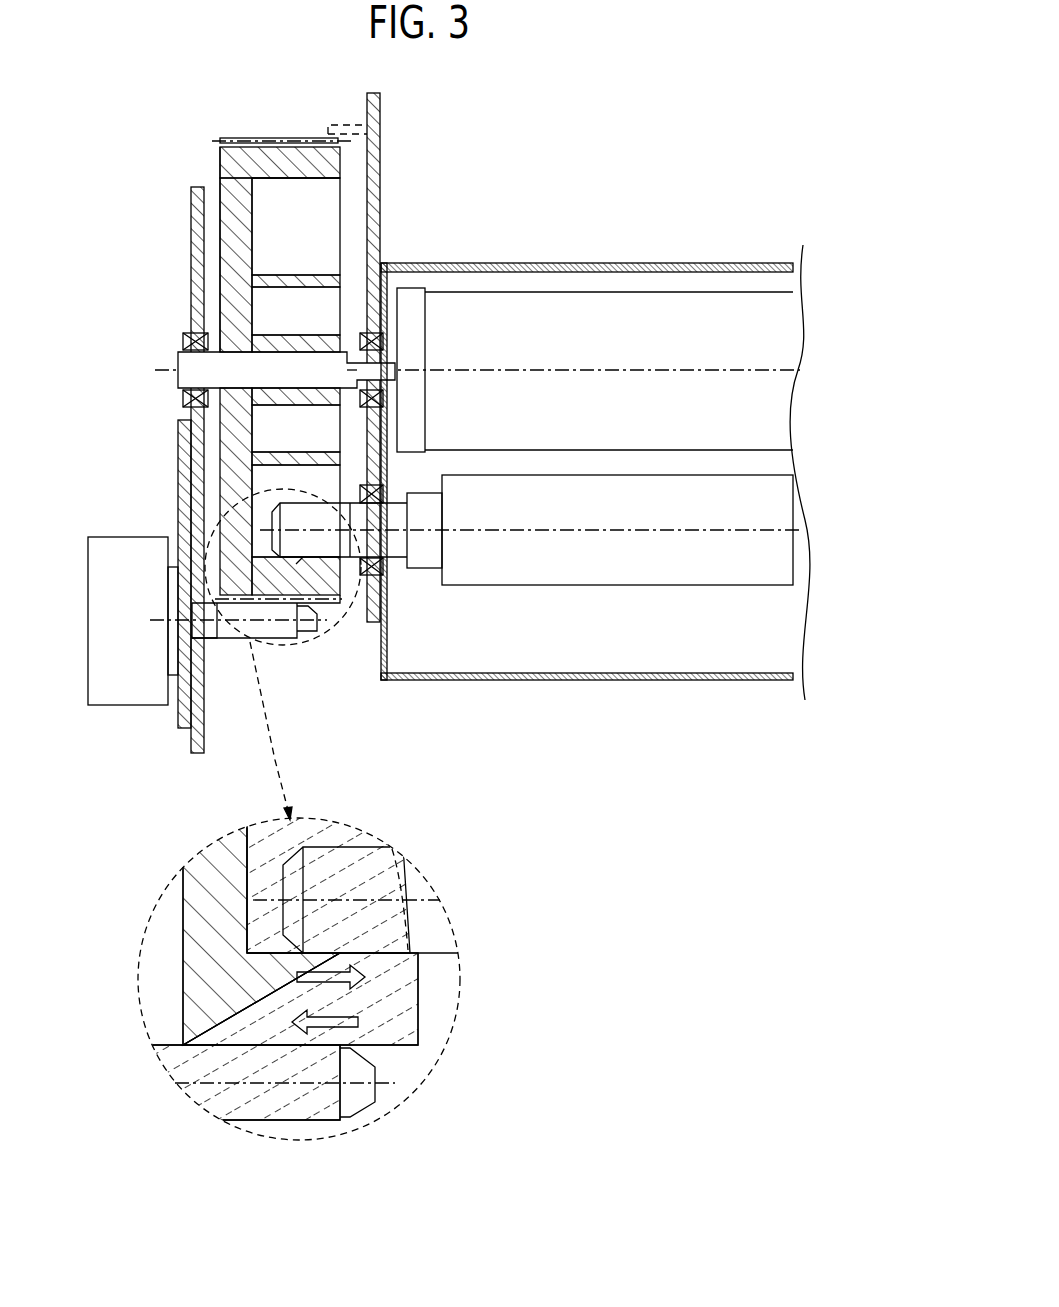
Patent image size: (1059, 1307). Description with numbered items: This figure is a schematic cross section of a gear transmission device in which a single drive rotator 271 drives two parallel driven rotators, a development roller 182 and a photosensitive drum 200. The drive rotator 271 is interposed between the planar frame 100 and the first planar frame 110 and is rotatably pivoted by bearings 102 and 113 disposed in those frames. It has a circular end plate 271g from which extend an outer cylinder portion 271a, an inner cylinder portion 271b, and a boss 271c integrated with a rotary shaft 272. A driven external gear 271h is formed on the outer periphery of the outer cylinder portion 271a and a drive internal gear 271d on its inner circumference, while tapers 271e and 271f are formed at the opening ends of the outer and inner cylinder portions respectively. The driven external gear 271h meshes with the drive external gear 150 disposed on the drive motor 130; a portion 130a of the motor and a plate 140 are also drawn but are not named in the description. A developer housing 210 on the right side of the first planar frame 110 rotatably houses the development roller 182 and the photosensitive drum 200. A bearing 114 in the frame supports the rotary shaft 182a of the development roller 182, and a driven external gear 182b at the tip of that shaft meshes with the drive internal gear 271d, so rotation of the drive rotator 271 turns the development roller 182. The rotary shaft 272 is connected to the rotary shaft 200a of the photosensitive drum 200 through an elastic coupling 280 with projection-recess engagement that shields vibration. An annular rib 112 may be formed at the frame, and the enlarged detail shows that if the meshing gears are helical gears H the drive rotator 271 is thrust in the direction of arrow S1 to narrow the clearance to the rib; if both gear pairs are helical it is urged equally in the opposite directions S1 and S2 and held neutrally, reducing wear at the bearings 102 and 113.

The planar frame 100 is at (191, 235).
The bearing 102 is at (183, 338).
The first planar frame 110 is at (380, 218).
The annular rib 112 is at (343, 122).
The bearing 113 is at (385, 340).
The bearing 114 is at (385, 488).
The drive motor 130 is at (125, 537).
The motor shaft 130a is at (210, 640).
The support plate 140 is at (178, 463).
The drive external gear 150 is at (297, 628).
The development roller 182 is at (622, 568).
The rotary shaft 182a is at (395, 568).
The driven external gear 182b is at (297, 512).
The photosensitive drum 200 is at (711, 308).
The rotary shaft 200a is at (390, 383).
The developer housing 210 is at (583, 264).
The drive rotator 271 is at (253, 137).
The outer cylinder portion 271a is at (332, 160).
The inner cylinder portion 271b is at (293, 261).
The boss 271c is at (293, 321).
The drive internal gear 271d is at (303, 555).
The taper 271e is at (330, 183).
The taper 271f is at (335, 280).
The circular end plate 271g is at (219, 172).
The driven external gear 271h is at (270, 597).
The rotary shaft 272 is at (180, 382).
The coupling 280 is at (390, 365).
The helical gears H is at (396, 830).
The arrow S1 is at (344, 979).
The arrow S2 is at (310, 1023).